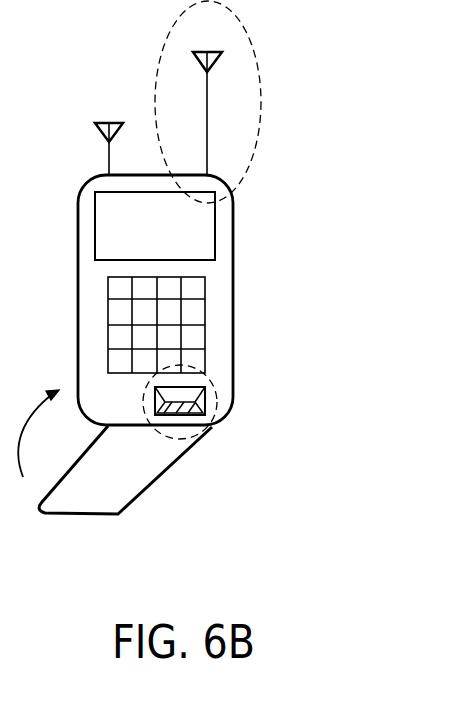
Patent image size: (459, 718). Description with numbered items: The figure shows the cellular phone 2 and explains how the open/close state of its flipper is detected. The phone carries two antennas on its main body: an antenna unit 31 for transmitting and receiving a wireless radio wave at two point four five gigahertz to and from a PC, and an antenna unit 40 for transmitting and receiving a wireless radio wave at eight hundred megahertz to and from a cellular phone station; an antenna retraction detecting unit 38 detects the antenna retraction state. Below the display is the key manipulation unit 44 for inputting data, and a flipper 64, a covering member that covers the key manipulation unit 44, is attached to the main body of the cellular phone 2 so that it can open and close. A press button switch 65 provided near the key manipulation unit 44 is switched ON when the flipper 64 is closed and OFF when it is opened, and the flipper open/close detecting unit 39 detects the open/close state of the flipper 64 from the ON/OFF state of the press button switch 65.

The cellular phone 2 is at (233, 278).
The antenna unit 31 is at (108, 150).
The antenna retraction detecting unit 38 is at (255, 143).
The flipper open/close detecting unit 39 is at (212, 375).
The antenna unit 40 is at (207, 107).
The key manipulation unit 44 is at (108, 330).
The flipper 64 is at (145, 492).
The press button switch 65 is at (200, 401).